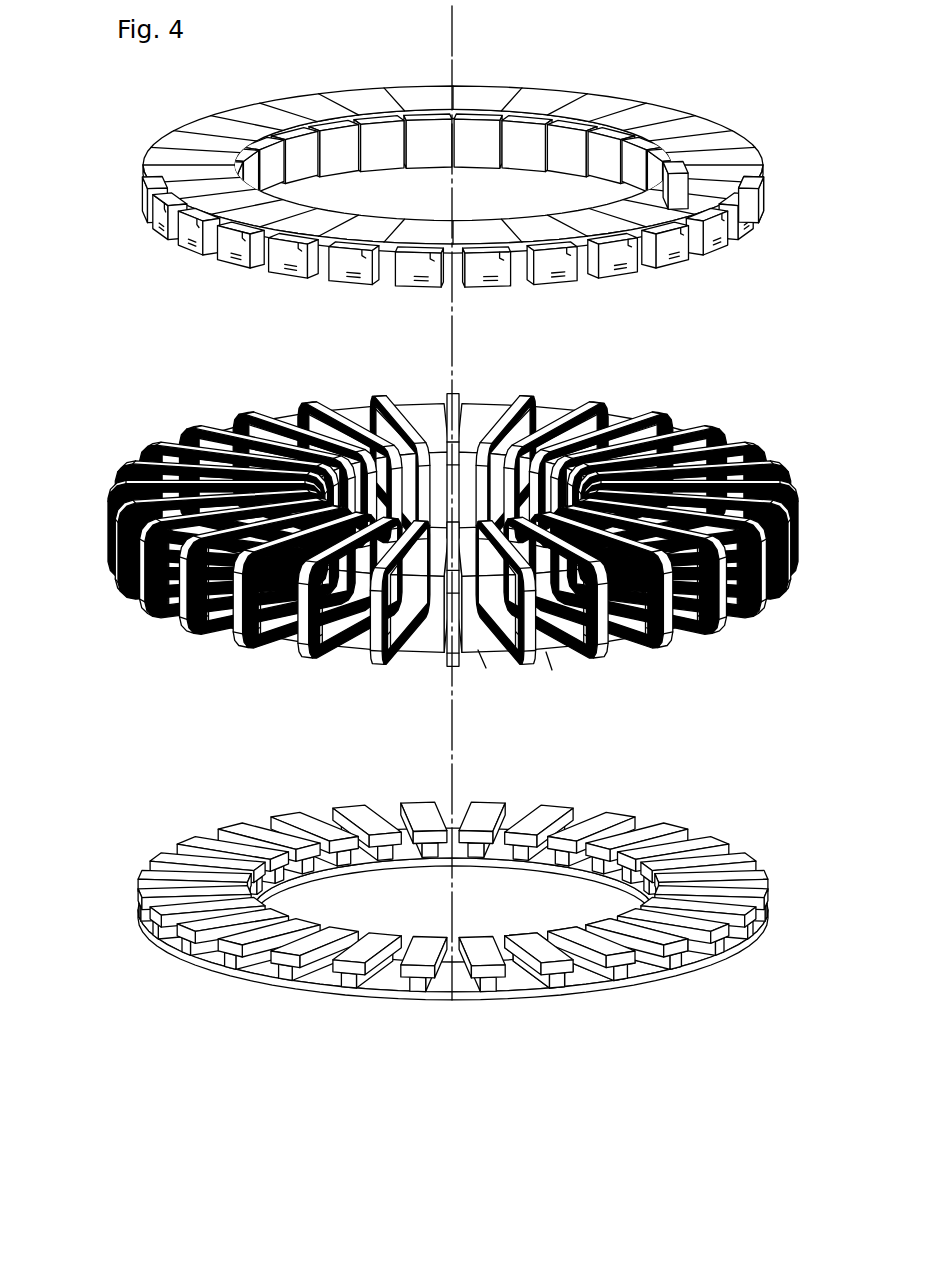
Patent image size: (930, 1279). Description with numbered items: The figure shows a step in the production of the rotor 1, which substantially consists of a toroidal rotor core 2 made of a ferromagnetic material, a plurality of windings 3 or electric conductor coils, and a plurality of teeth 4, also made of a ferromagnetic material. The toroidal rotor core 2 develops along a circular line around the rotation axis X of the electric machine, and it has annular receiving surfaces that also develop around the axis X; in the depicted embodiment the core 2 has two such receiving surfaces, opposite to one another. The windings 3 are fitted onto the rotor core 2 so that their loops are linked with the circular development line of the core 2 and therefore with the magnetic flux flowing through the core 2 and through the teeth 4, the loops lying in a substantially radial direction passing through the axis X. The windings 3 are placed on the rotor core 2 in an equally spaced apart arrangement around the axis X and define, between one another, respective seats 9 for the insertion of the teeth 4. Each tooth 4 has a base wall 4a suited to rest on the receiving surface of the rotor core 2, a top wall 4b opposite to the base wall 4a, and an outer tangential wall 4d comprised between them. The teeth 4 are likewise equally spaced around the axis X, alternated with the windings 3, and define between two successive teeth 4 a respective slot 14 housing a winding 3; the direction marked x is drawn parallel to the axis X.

The rotor 1 is at (448, 586).
The toroidal rotor core 2 is at (338, 668).
The windings 3 is at (241, 669).
The teeth 4 is at (487, 568).
The base wall 4a is at (740, 847).
The top wall 4b is at (547, 100).
The second tangential wall 4d is at (767, 188).
The seats 9 is at (483, 663).
The slot 14 is at (517, 277).
The rotation axis X is at (452, 32).
The axial direction x is at (560, 35).